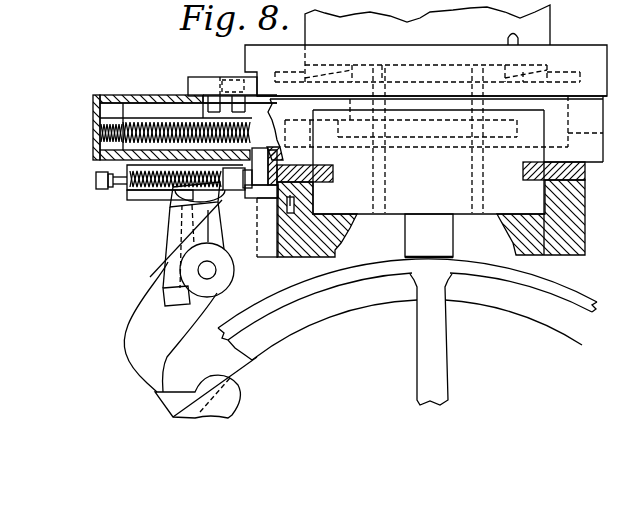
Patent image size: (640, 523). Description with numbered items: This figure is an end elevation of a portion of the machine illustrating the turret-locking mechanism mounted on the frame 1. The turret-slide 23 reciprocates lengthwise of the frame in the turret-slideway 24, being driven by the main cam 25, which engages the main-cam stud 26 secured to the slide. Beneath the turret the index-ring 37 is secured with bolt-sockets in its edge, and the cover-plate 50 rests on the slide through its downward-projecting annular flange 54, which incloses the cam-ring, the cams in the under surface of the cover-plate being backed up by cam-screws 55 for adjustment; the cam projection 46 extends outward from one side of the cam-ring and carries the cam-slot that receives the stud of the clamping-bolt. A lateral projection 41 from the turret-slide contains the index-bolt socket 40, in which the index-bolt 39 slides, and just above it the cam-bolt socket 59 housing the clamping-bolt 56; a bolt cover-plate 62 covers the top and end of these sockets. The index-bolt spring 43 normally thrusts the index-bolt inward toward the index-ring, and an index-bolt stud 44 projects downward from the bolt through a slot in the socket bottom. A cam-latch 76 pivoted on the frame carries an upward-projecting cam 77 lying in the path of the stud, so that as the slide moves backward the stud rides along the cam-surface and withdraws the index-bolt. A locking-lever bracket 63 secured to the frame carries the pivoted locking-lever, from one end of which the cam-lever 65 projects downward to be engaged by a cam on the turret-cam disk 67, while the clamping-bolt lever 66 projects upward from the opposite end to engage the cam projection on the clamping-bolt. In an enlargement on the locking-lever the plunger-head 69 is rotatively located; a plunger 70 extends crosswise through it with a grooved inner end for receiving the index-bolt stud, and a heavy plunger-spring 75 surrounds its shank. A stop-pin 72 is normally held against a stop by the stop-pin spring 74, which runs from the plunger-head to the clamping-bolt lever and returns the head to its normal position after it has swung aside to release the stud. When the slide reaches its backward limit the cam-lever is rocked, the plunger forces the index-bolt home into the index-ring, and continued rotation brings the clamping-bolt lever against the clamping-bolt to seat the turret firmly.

The frame 1 is at (551, 217).
The turret-slide 23 is at (429, 182).
The turret-slideway 24 is at (499, 213).
The main cam 25 is at (598, 306).
The main-cam stud 26 is at (406, 238).
The index-ring 37 is at (603, 134).
The index-bolt 39 is at (121, 118).
The index-bolt socket 40 is at (100, 147).
The lateral projection 41 is at (100, 158).
The index-bolt spring 43 is at (100, 128).
The index-bolt stud 44 is at (260, 158).
The clamp block 46 is at (224, 70).
The cover-plate 50 is at (607, 52).
The annular flange 54 is at (607, 88).
The cam-screws 55 is at (505, 31).
The clamping-bolt 56 is at (152, 110).
The cam-bolt socket 59 is at (100, 110).
The bolt cover-plate 62 is at (166, 123).
The locking-lever bracket 63 is at (264, 246).
The cam-lever 65 is at (131, 324).
The clamping-bolt lever 66 is at (172, 202).
The turret-cam disk 67 is at (198, 390).
The plunger-head 69 is at (168, 197).
The plunger 70 is at (96, 181).
The stop-pin 72 is at (222, 222).
The stop-pin spring 74 is at (138, 196).
The plunger-spring 75 is at (133, 193).
The cam-latch 76 is at (220, 207).
The cam 77 is at (284, 165).